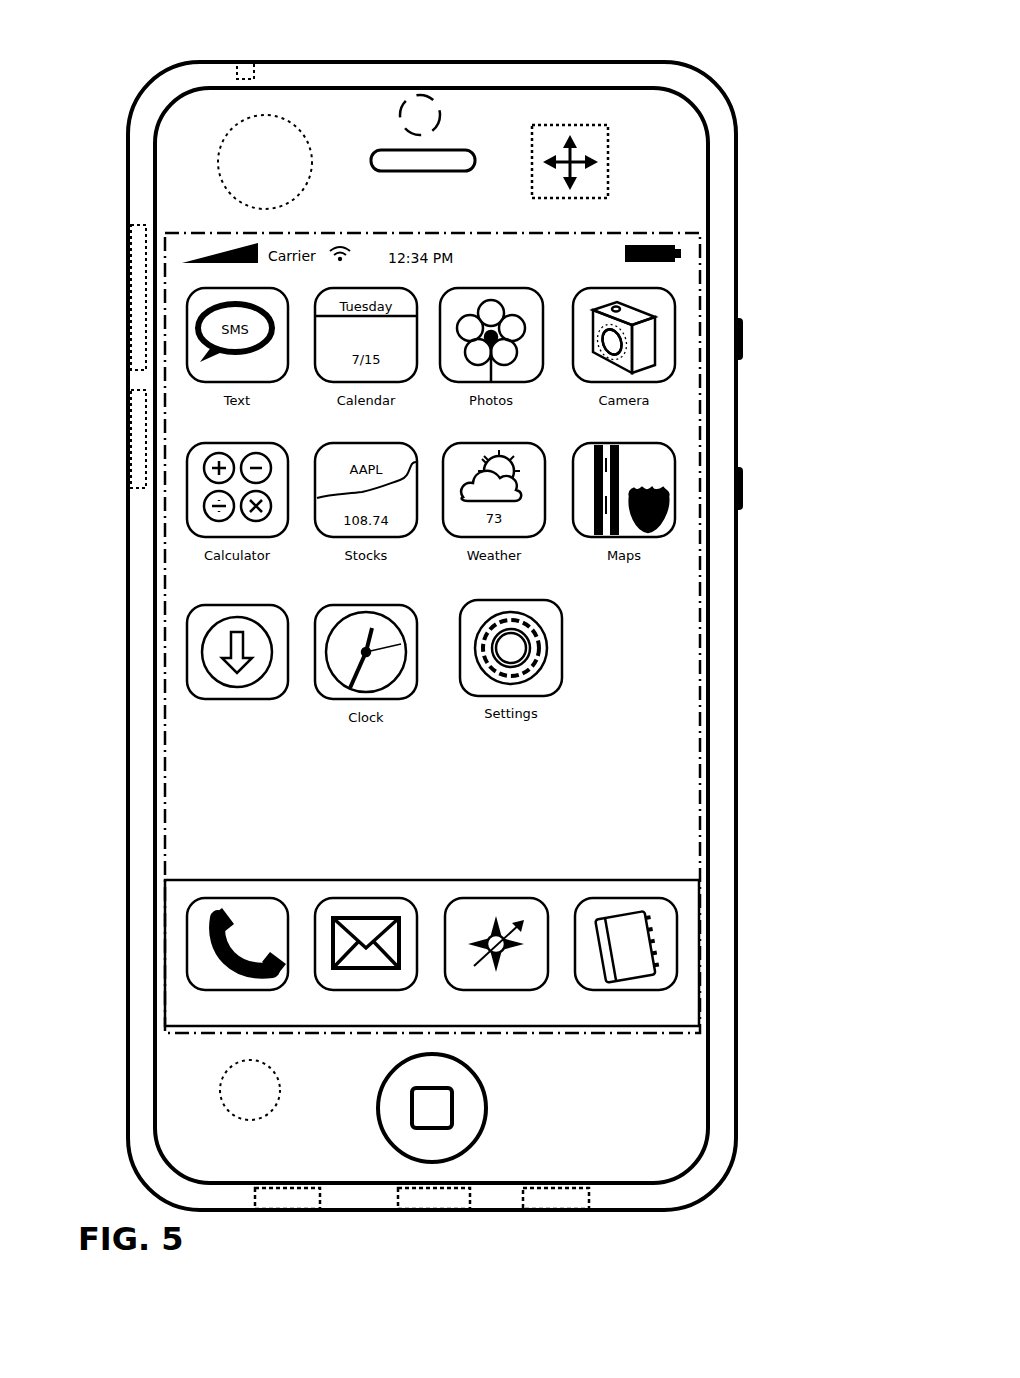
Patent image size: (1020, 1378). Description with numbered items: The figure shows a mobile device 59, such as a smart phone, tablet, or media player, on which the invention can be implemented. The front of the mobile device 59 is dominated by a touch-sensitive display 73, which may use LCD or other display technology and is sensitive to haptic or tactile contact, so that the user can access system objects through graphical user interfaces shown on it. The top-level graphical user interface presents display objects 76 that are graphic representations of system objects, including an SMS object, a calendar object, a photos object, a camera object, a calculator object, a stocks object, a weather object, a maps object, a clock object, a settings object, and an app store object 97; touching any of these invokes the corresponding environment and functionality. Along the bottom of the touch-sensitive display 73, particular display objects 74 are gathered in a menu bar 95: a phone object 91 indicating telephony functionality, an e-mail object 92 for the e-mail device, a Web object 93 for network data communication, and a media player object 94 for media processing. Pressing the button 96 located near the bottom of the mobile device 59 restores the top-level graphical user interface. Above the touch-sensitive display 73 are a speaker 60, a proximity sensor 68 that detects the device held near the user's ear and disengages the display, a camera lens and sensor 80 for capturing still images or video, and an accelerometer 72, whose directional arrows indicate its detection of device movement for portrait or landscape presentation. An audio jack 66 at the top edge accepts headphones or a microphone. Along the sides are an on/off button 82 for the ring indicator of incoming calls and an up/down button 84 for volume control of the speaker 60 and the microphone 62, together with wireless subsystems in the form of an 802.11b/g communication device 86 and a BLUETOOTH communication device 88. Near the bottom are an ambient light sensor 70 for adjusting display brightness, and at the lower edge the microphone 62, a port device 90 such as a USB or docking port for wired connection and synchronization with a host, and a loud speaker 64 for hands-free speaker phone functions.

The mobile device 59 is at (521, 62).
The audio jack 66 is at (252, 62).
The proximity sensor 68 is at (228, 184).
The camera lens and sensor 80 is at (444, 118).
The speaker 60 is at (428, 172).
The accelerometer 72 is at (611, 168).
The touch-sensitive display 73 is at (631, 233).
The 802.11b/g communication device 86 is at (138, 277).
The BLUETOOTH communication device 88 is at (138, 438).
The on/off button 82 is at (743, 338).
The up/down button 84 is at (743, 485).
The display objects 76 is at (650, 758).
The display objects 74 is at (692, 892).
The app store object 97 is at (238, 604).
The phone object 91 is at (238, 897).
The e-mail object 92 is at (366, 897).
The Web object 93 is at (498, 897).
The media player object 94 is at (624, 897).
The menu bar 95 is at (578, 1024).
The button 96 is at (488, 1105).
The ambient light sensor 70 is at (252, 1118).
The microphone 62 is at (293, 1211).
The port device 90 is at (436, 1211).
The loud speaker 64 is at (558, 1211).